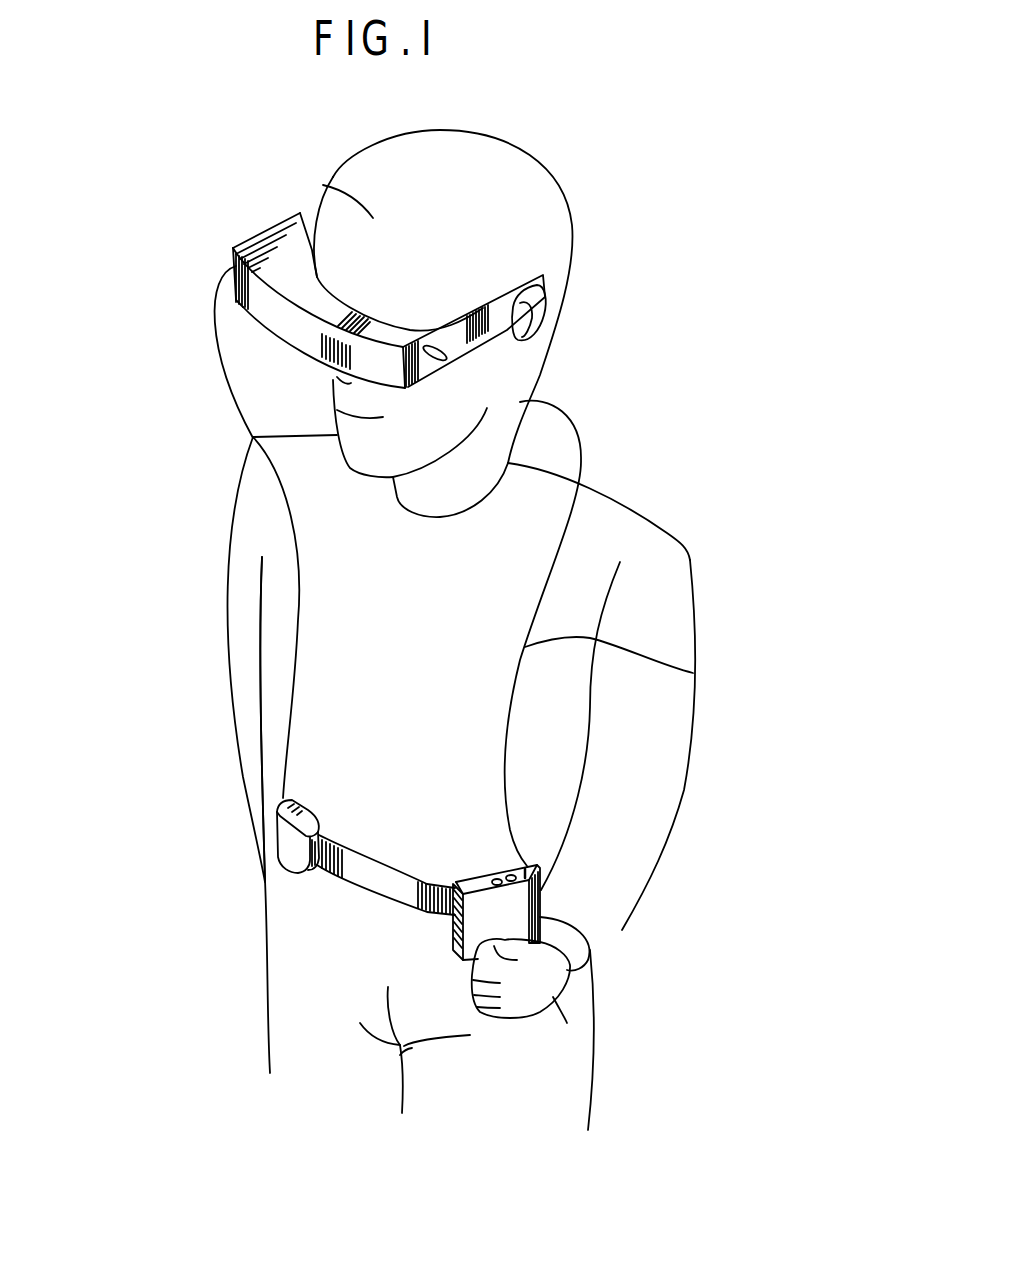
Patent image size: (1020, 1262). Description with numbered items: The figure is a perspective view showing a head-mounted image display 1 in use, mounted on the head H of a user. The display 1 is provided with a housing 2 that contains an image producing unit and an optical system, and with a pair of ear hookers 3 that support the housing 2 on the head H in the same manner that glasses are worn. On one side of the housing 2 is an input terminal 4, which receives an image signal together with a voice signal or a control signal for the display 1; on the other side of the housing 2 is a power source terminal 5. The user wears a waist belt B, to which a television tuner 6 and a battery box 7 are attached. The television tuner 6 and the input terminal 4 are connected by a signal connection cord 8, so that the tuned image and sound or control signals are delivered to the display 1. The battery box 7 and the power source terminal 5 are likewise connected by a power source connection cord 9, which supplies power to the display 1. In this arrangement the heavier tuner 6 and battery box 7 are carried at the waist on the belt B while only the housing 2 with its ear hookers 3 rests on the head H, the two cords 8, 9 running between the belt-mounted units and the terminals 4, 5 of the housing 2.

The head-mounted image display 1 is at (367, 287).
The housing 2 is at (283, 333).
The ear hookers 3 is at (303, 223).
The input terminal 4 is at (446, 360).
The power source terminal 5 is at (233, 250).
The television tuner 6 is at (540, 917).
The battery box 7 is at (278, 832).
The signal connection cord 8 is at (693, 673).
The power source connection cord 9 is at (292, 535).
The waist belt B is at (374, 878).
The head H is at (323, 185).